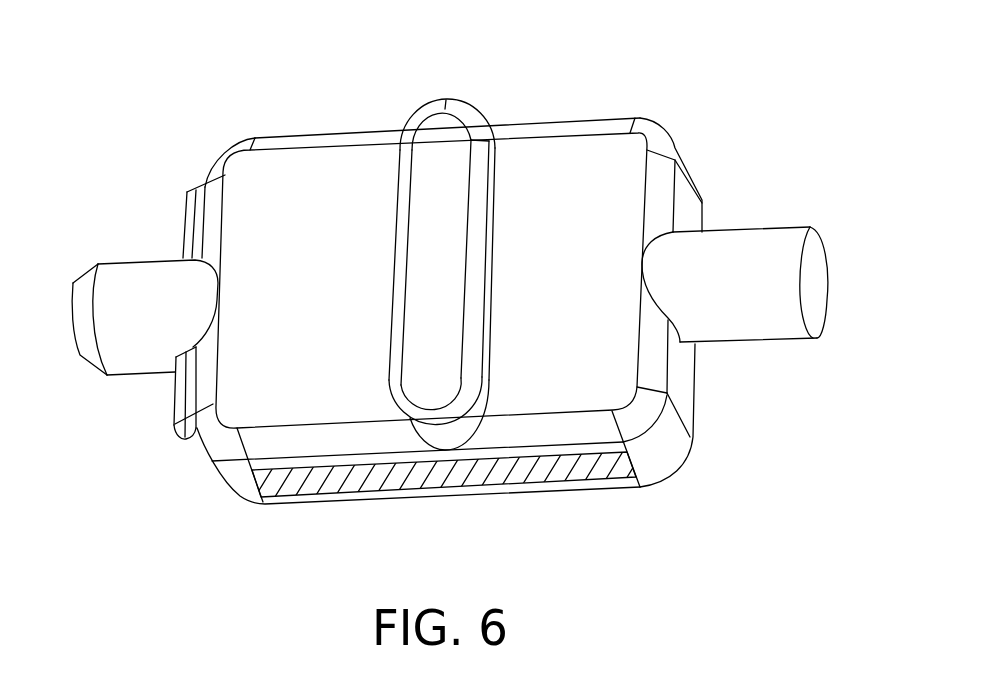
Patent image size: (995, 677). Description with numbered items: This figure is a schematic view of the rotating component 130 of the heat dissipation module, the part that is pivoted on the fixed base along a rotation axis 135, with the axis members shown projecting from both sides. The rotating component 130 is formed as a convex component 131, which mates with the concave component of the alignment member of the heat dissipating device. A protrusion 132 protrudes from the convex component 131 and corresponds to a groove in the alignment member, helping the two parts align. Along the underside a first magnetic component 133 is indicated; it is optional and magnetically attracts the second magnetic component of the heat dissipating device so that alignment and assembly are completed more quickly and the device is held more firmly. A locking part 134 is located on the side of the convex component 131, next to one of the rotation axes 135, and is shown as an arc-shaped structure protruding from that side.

The rotating component 130 is at (686, 62).
The convex component 131 is at (562, 145).
The protrusion 132 is at (442, 133).
The first magnetic component 133 is at (480, 475).
The locking part 134 is at (187, 213).
The rotation axis 135 is at (133, 276).